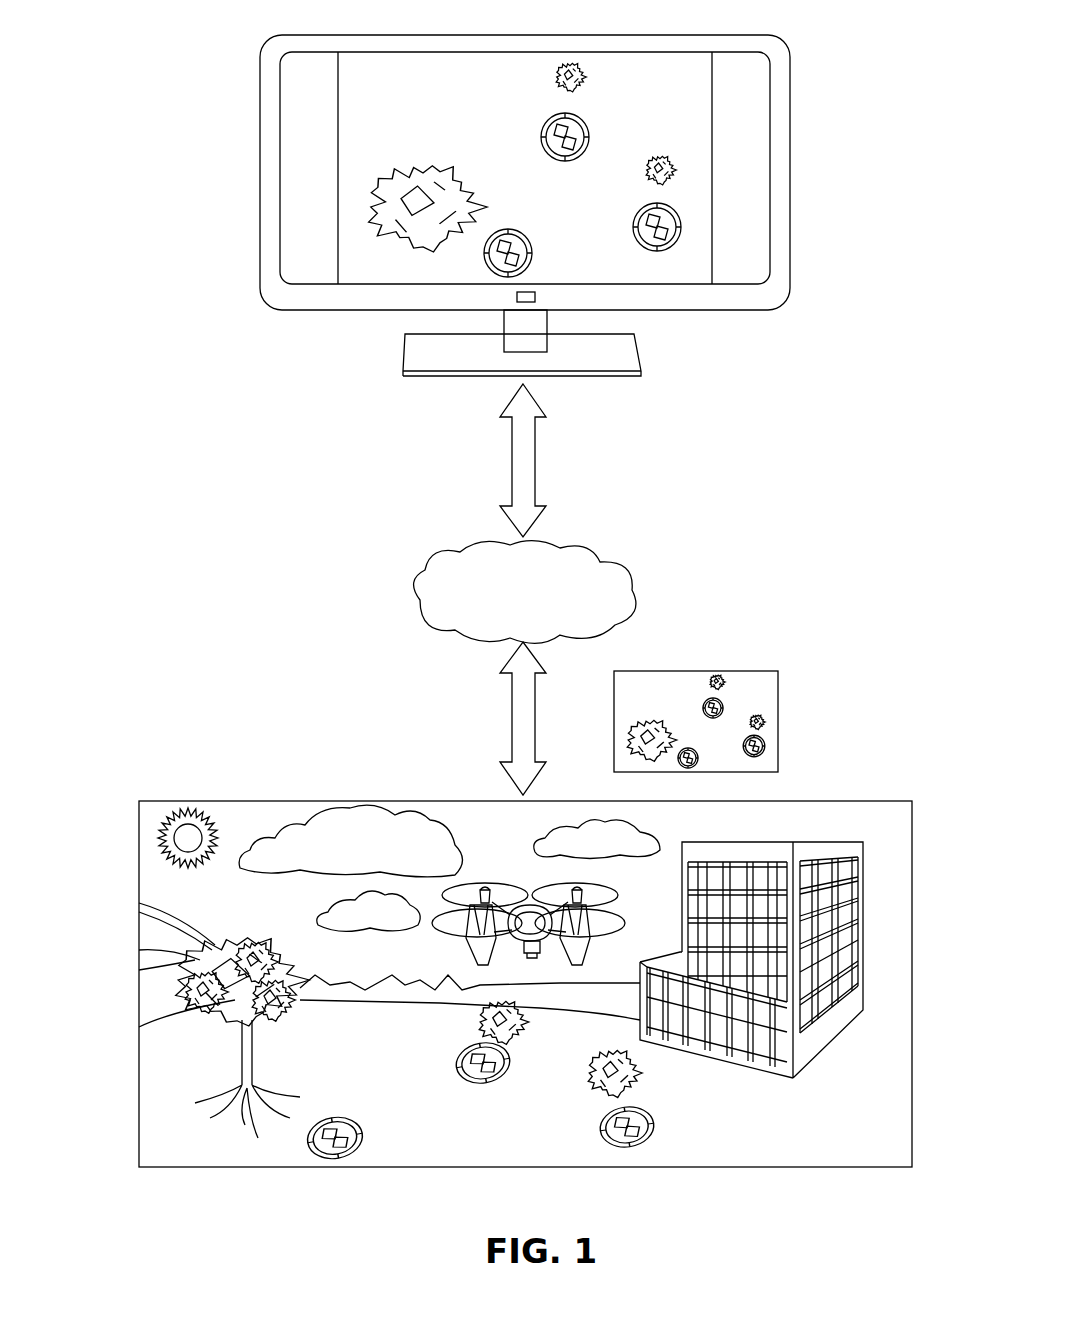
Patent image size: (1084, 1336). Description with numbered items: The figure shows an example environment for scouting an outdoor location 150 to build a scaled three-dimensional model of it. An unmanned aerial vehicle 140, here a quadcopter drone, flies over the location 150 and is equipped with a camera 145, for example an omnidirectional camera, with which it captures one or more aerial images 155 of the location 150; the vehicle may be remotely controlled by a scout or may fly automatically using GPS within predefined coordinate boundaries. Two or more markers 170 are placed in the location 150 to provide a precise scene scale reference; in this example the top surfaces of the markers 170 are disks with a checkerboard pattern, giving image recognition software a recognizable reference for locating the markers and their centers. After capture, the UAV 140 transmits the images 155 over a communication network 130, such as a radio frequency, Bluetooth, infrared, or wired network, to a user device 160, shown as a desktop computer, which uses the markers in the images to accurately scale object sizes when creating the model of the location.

The communication network 130 is at (420, 570).
The unmanned aerial vehicle 140 is at (466, 895).
The camera 145 is at (540, 958).
The location 150 is at (168, 786).
The aerial images 155 is at (733, 671).
The user device 160 is at (313, 35).
The markers 170 is at (365, 1138).